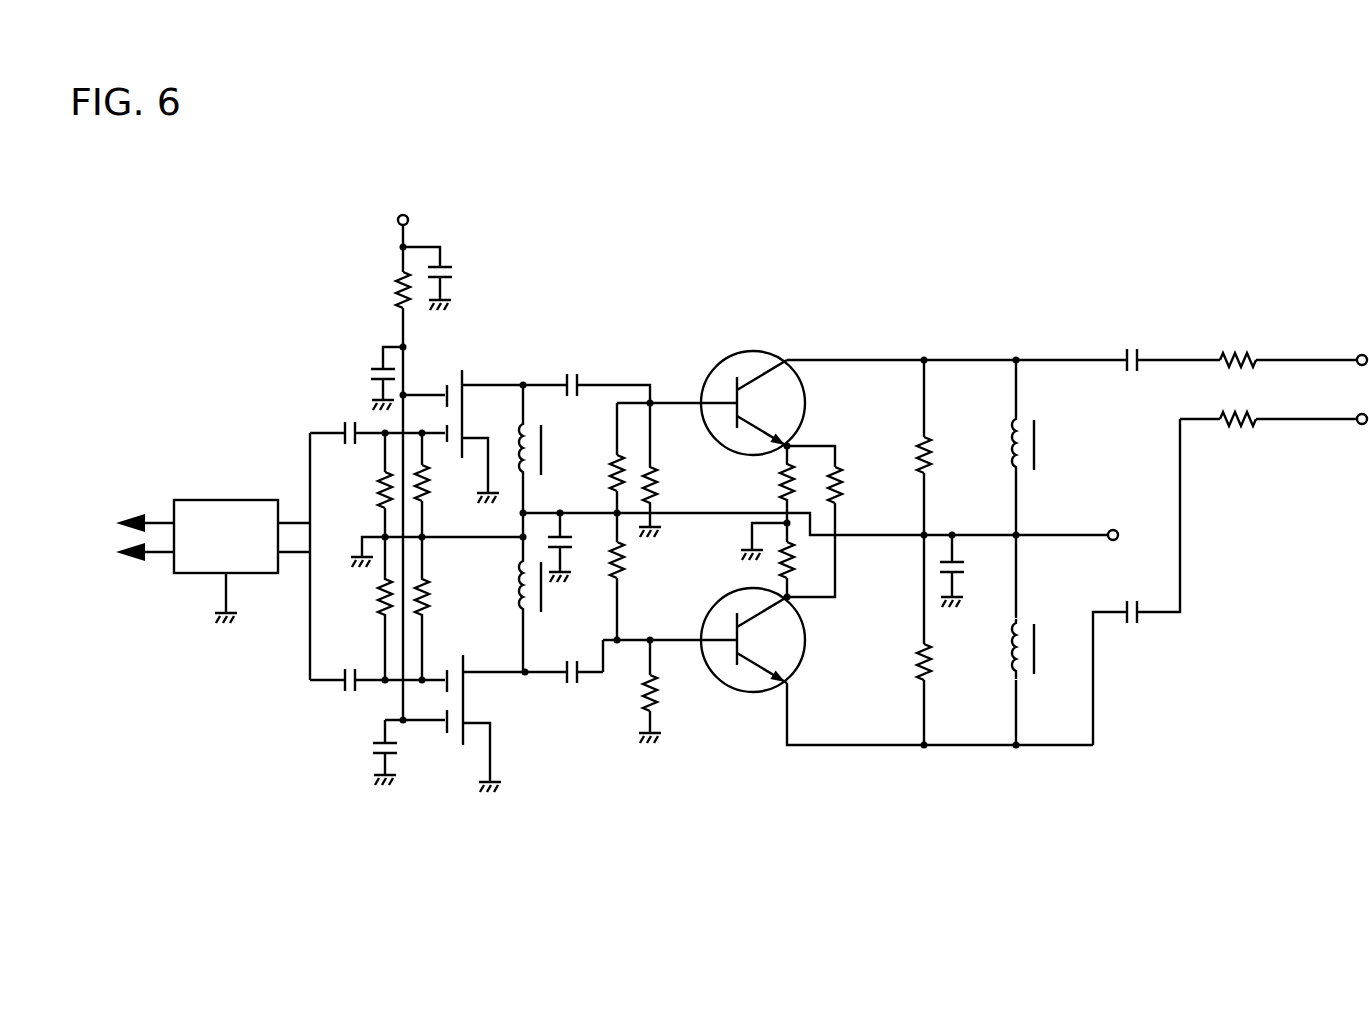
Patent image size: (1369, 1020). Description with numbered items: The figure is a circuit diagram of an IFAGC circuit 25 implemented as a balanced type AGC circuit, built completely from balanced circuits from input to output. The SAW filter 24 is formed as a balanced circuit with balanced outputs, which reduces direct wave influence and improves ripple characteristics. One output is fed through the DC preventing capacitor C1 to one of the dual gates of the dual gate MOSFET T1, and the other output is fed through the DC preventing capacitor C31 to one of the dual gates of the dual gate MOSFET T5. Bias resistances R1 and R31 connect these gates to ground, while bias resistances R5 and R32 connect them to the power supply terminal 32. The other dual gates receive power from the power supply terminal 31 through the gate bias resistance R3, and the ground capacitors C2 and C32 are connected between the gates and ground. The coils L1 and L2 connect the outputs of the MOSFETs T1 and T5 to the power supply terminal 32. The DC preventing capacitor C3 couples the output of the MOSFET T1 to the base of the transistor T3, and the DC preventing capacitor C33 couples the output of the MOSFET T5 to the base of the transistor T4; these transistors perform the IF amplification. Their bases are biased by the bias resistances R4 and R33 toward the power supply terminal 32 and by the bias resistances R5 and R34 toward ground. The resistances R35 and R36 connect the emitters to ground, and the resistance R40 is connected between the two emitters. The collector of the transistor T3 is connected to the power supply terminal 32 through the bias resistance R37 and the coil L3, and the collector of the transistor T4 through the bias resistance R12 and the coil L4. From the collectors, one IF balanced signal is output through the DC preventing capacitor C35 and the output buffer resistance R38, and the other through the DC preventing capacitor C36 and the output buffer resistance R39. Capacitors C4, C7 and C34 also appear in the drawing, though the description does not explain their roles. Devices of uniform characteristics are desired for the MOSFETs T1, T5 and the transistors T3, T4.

The SAW filter 24 is at (248, 500).
The amplifier circuit 25 is at (537, 256).
The power supply terminal 31 is at (403, 212).
The power supply terminal 32 is at (1113, 530).
The dual gate MOSFET T1 is at (485, 436).
The transistor T3 is at (773, 403).
The transistor T4 is at (773, 640).
The dual gate MOSFET T5 is at (507, 723).
The bias resistance R1 is at (365, 491).
The gate bias resistance R3 is at (382, 290).
The bias resistance R4 is at (598, 458).
The bias resistance R5 is at (557, 470).
The bias resistance R12 is at (894, 661).
The bias resistance R31 is at (360, 597).
The bias resistance R32 is at (451, 597).
The bias resistance R33 is at (647, 576).
The bias resistance R34 is at (675, 691).
The resistance R35 is at (757, 482).
The resistance R36 is at (759, 564).
The bias resistance R37 is at (894, 455).
The output buffer resistance R38 is at (1239, 378).
The output buffer resistance R39 is at (1239, 435).
The resistance R40 is at (841, 521).
The DC preventing capacitor C1 is at (350, 449).
The ground capacitor C2 is at (366, 378).
The DC preventing capacitor C3 is at (573, 372).
The capacitor C4 is at (577, 547).
The capacitor C7 is at (447, 278).
The DC preventing capacitor C31 is at (351, 664).
The ground capacitor C32 is at (354, 759).
The DC preventing capacitor C33 is at (571, 691).
The capacitor C34 is at (960, 589).
The DC preventing capacitor C35 is at (1126, 376).
The DC preventing capacitor C36 is at (1131, 634).
The coil L1 is at (549, 450).
The coil L2 is at (513, 587).
The coil L3 is at (1003, 445).
The coil L4 is at (1003, 649).